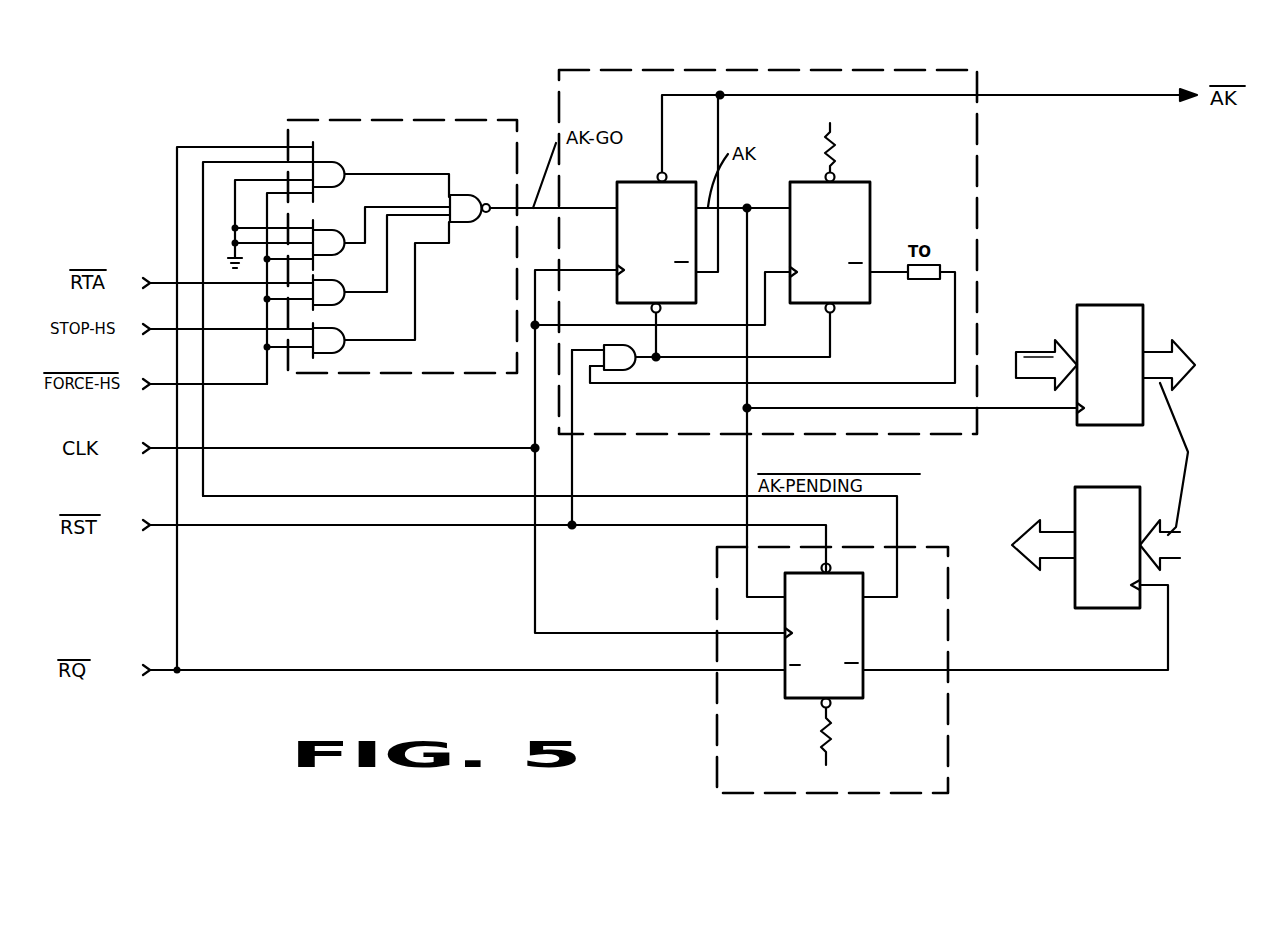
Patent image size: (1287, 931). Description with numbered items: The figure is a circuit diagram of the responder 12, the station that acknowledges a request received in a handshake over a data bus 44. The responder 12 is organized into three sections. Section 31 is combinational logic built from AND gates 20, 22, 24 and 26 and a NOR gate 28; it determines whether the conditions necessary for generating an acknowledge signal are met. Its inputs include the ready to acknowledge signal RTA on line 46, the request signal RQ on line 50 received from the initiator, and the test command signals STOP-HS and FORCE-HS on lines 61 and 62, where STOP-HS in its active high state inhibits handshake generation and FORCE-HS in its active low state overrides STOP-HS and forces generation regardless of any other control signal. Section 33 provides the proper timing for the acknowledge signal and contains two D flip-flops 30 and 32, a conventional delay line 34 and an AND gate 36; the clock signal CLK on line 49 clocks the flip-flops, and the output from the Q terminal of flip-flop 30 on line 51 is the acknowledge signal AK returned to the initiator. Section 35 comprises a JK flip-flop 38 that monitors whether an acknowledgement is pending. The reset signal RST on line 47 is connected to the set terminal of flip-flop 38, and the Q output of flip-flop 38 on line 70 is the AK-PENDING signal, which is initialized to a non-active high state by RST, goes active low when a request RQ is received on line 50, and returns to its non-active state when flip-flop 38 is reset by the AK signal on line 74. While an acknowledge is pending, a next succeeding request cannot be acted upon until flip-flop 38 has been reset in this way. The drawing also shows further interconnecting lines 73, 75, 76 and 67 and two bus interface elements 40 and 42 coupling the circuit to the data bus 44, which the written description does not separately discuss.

The responder 12 is at (438, 80).
The section 31 is at (435, 125).
The AND gate 20 is at (328, 163).
The AND gate 22 is at (330, 236).
The AND gate 24 is at (328, 284).
The AND gate 26 is at (328, 334).
The NOR gate 28 is at (465, 198).
The line 46 is at (158, 283).
The line 61 is at (163, 331).
The line 62 is at (163, 386).
The line 49 is at (160, 447).
The line 47 is at (155, 525).
The line 50 is at (155, 670).
The AK-GO line 73 is at (582, 205).
The D flip-flop 30 is at (681, 182).
The line 74 is at (769, 206).
The D flip-flop 32 is at (858, 188).
The flip-flop output line 75 is at (879, 268).
The delay line 34 is at (924, 286).
The section 33 is at (979, 90).
The line 51 is at (1132, 98).
The AND gate 36 is at (636, 366).
The clear line 76 is at (688, 359).
The data output buffer 40 is at (1124, 308).
The data input buffer 42 is at (1127, 490).
The data bus 44 is at (1188, 452).
The line 70 is at (897, 521).
The section 35 is at (946, 598).
The JK flip-flop 38 is at (860, 625).
The enable line 67 is at (1015, 671).